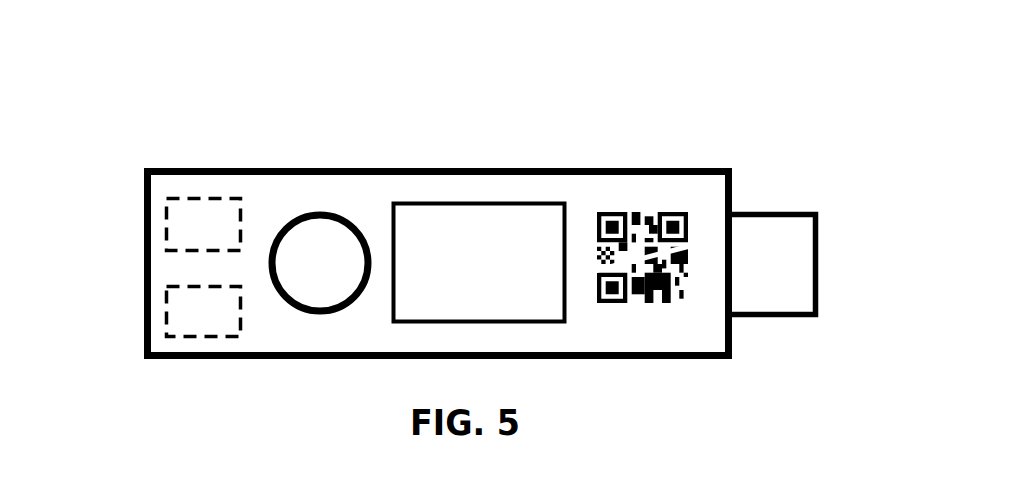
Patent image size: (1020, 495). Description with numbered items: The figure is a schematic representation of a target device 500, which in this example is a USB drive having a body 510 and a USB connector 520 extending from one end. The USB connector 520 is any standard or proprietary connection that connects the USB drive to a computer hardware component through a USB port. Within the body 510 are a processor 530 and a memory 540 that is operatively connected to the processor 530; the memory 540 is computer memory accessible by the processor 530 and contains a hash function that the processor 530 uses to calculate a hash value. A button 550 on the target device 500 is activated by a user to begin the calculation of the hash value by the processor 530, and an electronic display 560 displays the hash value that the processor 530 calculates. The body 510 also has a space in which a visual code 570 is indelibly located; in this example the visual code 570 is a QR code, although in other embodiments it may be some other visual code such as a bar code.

The target device 500 is at (710, 130).
The body 510 is at (265, 168).
The USB connector 520 is at (778, 212).
The processor 530 is at (200, 223).
The memory 540 is at (196, 317).
The button 550 is at (315, 263).
The electronic display 560 is at (416, 232).
The visual code 570 is at (633, 213).